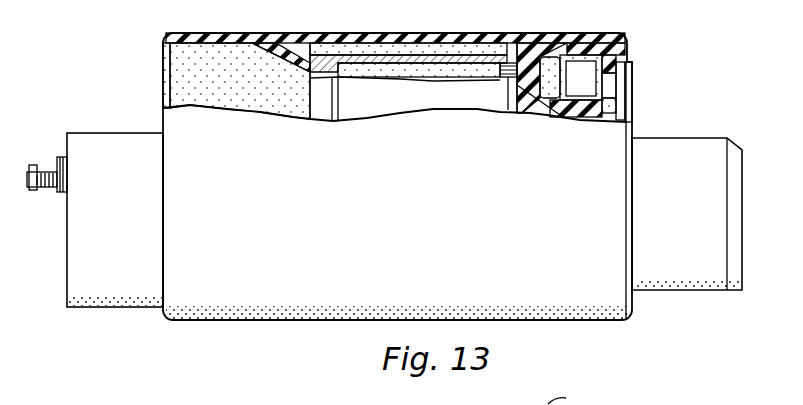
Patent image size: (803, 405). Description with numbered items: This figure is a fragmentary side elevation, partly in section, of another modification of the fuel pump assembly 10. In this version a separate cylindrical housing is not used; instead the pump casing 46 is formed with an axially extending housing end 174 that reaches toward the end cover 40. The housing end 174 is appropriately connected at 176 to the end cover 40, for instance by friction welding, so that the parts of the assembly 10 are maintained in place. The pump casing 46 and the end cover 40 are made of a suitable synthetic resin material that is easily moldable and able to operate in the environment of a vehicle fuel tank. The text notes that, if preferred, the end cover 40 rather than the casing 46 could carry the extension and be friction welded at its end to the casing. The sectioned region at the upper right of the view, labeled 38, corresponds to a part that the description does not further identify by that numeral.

The fuel pump assembly 10 is at (452, 32).
The bearing assembly 38 is at (573, 29).
The end cover 40 is at (110, 124).
The pump casing 46 is at (632, 62).
The housing end 174 is at (385, 35).
The connection 176 is at (182, 33).